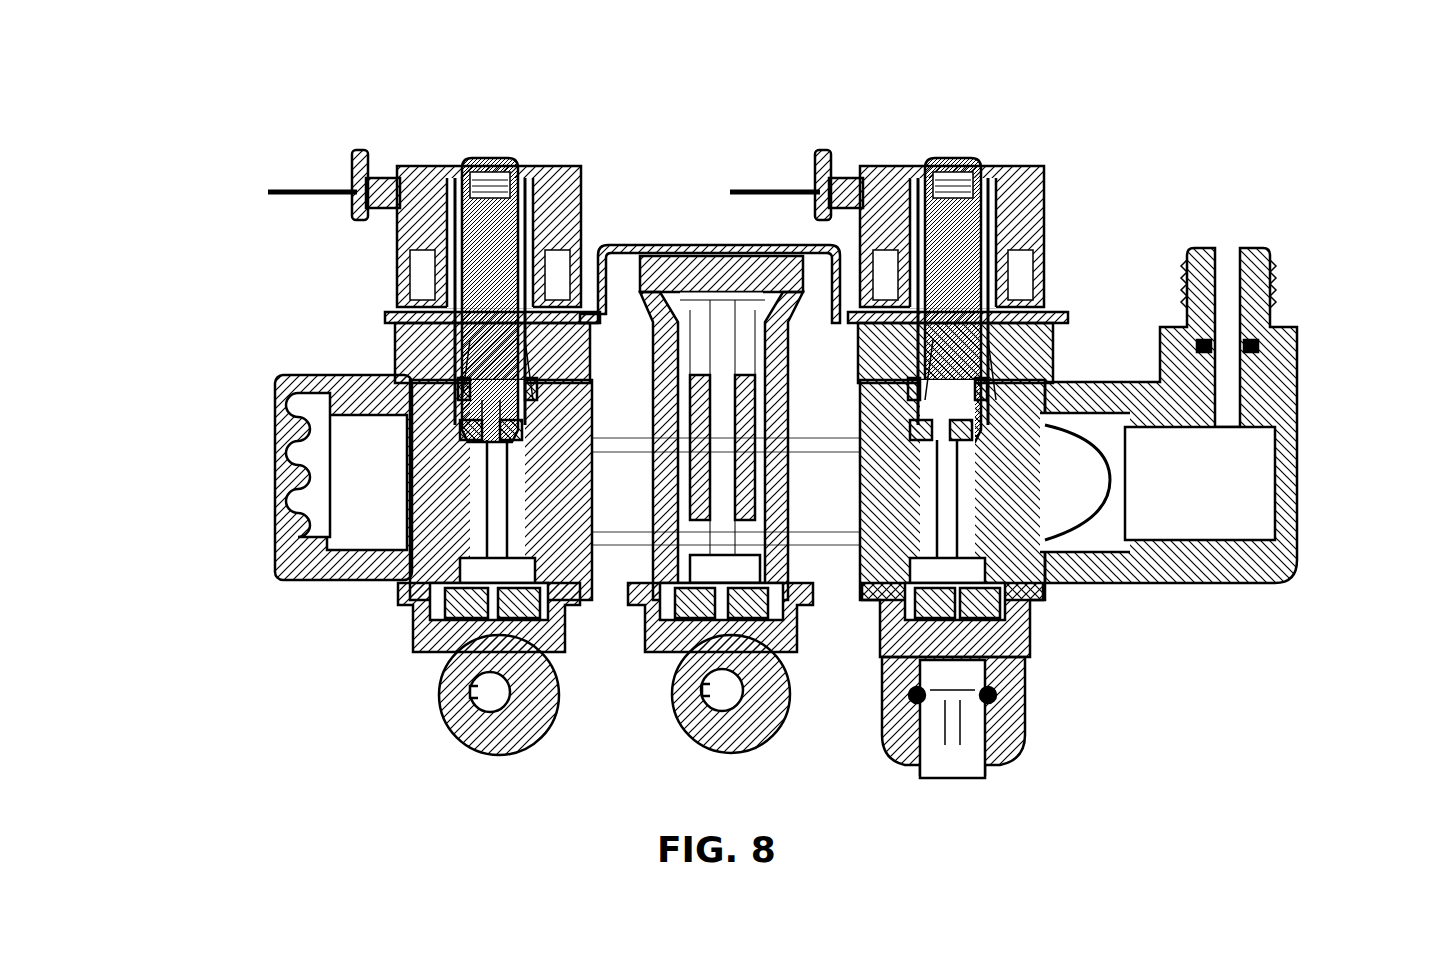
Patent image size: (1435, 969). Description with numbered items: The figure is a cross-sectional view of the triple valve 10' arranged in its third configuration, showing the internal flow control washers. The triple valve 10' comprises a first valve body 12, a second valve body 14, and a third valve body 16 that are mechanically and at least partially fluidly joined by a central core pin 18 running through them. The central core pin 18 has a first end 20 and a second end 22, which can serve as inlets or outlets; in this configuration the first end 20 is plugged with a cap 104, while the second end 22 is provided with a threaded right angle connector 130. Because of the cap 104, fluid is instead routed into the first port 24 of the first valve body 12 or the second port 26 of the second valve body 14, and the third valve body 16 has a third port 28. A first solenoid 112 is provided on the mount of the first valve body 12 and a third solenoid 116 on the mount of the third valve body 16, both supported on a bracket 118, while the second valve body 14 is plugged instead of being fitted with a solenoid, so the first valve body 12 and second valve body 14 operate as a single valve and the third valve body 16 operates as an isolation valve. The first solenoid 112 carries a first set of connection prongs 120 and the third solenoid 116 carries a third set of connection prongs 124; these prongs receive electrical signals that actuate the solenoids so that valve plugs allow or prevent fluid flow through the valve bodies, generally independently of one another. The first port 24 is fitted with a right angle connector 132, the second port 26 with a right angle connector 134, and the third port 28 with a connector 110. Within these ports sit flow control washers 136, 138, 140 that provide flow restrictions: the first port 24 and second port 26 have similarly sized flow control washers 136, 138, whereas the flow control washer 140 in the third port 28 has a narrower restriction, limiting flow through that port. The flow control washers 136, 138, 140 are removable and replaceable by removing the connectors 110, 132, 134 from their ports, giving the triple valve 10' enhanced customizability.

The first set of connection prongs 120 is at (300, 186).
The first solenoid 112 is at (405, 180).
The bracket 118 is at (627, 243).
The third set of connection prongs 124 is at (752, 187).
The third solenoid 116 is at (1015, 180).
The triple valve 10' is at (1119, 334).
The cap 104 is at (276, 420).
The first valve body 12 is at (547, 427).
The second valve body 14 is at (773, 382).
The third valve body 16 is at (877, 423).
The threaded right angle connector 130 is at (1292, 475).
The first end 20 is at (330, 598).
The first port 24 is at (432, 583).
The second port 26 is at (663, 583).
The central core pin 18 is at (833, 545).
The third port 28 is at (1007, 583).
The second end 22 is at (1112, 598).
The flow control washer 136 is at (430, 645).
The flow control washer 138 is at (657, 645).
The flow control washer 140 is at (878, 655).
The straight connector 110 is at (1010, 729).
The right angle connector 132 is at (533, 740).
The right angle connector 134 is at (768, 740).